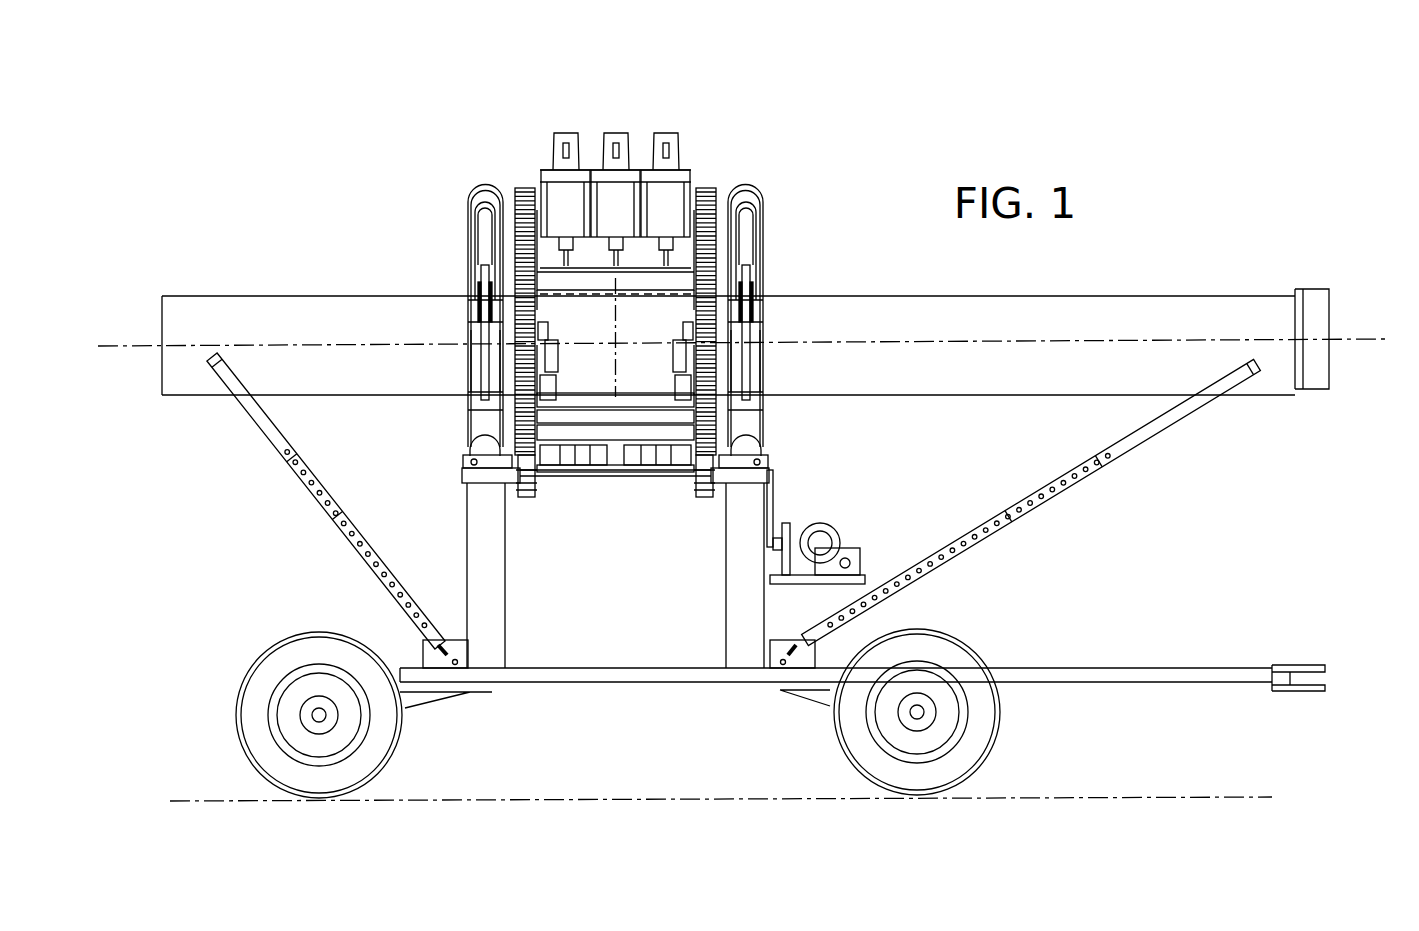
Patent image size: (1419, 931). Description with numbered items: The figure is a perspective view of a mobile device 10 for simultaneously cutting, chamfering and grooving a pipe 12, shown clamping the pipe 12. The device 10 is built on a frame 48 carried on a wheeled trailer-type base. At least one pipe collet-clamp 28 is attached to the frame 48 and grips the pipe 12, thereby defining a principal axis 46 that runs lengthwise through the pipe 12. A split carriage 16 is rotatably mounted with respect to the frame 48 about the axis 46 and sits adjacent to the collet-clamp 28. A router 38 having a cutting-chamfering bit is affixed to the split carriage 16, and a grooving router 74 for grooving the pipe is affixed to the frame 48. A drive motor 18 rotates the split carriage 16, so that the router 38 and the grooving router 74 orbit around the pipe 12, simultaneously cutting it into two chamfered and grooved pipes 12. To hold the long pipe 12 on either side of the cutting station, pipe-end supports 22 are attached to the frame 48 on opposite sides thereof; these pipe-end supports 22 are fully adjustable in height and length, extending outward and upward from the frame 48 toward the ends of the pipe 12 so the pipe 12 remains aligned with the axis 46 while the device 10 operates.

The mobile device 10 is at (256, 134).
The pipe 12 is at (1167, 312).
The split carriage 16 is at (524, 188).
The drive motor 18 is at (820, 525).
The pipe-end supports 22 is at (308, 493).
The pipe collet-clamp 28 is at (485, 195).
The router 38 is at (618, 132).
The principal axis 46 is at (136, 343).
The frame 48 is at (490, 690).
The grooving router 74 is at (566, 132).